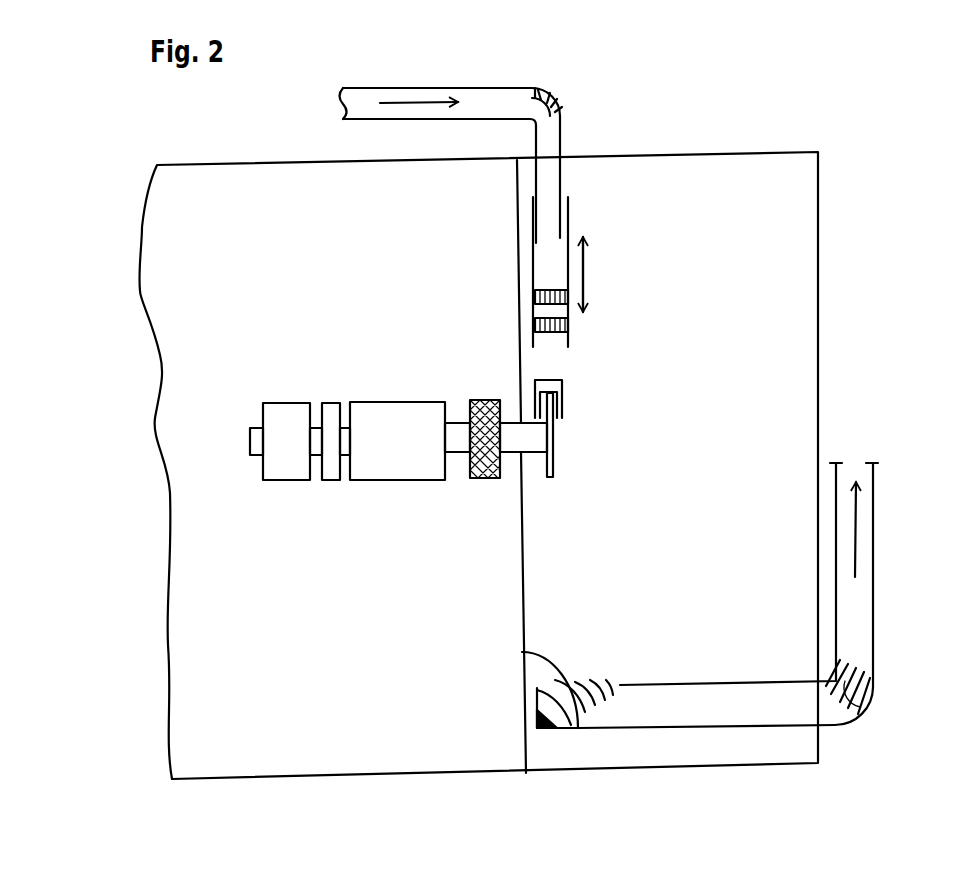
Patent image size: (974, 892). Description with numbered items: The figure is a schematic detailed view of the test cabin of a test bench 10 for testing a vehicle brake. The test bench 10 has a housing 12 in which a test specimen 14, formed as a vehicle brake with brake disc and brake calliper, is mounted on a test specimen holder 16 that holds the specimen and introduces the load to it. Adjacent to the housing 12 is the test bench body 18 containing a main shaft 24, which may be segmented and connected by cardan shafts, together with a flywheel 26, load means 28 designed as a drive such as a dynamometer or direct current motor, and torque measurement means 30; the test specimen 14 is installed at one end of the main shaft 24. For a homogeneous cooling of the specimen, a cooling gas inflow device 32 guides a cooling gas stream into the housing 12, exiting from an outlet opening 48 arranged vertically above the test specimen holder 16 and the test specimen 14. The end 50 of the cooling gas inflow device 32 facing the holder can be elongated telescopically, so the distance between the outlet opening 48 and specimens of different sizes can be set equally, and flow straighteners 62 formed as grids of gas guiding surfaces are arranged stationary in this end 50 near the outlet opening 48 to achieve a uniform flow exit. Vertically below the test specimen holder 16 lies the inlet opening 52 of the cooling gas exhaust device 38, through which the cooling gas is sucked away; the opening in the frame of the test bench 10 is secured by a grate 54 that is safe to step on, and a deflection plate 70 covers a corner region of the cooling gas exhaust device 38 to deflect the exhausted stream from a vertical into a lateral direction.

The test bench 10 is at (899, 130).
The housing 12 is at (732, 275).
The test specimen 14 is at (565, 471).
The test specimen holder 16 is at (538, 452).
The test bench body 18 is at (350, 268).
The main shaft 24 is at (360, 493).
The flywheel 26 is at (295, 472).
The load means 28 is at (401, 473).
The torque measurement means 30 is at (485, 478).
The cooling gas inflow device 32 is at (526, 71).
The cooling gas exhaust device 38 is at (890, 545).
The outlet opening 48 is at (552, 349).
The end of the cooling gas inflow device 50 is at (596, 289).
The inlet opening 52 is at (583, 666).
The grate 54 is at (524, 652).
The flow straightener 62 is at (535, 296).
The deflection plate 70 is at (547, 727).